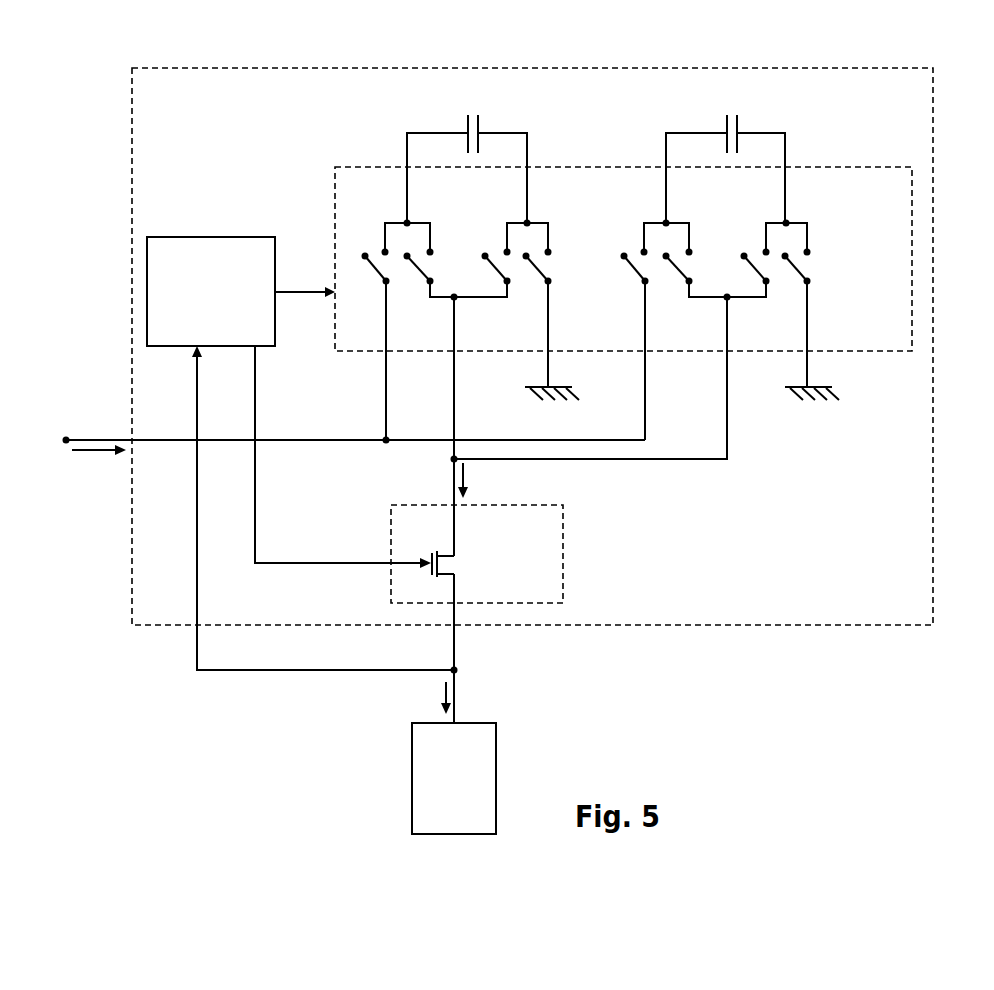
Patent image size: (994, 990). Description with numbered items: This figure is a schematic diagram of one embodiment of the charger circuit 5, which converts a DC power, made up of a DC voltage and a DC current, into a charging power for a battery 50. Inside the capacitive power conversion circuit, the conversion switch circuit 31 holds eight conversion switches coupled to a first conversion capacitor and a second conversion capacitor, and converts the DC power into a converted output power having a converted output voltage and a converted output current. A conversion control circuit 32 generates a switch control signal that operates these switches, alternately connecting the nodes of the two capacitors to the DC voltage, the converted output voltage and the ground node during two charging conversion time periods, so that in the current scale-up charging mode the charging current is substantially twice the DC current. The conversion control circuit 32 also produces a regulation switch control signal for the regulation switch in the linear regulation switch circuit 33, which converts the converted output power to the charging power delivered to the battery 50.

The charger circuit 5 is at (237, 37).
The conversion switch circuit 31 is at (372, 197).
The conversion control circuit 32 is at (268, 339).
The linear regulation switch circuit 33 is at (549, 540).
The battery 50 is at (466, 820).